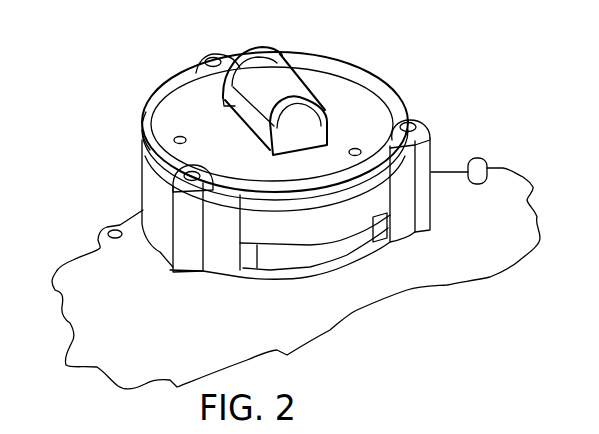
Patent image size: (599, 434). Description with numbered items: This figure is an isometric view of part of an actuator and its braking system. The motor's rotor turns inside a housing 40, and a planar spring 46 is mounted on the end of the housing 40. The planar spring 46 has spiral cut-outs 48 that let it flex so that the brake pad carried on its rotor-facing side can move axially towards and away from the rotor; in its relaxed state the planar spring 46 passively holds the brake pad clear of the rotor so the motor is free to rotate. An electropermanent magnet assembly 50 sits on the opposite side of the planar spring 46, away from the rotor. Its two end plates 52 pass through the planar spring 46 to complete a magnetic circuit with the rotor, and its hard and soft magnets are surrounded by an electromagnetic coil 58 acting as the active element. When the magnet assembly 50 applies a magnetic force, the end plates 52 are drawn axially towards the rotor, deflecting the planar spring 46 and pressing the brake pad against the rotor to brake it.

The housing 40 is at (297, 232).
The planar spring 46 is at (197, 107).
The spiral cut-outs 48 is at (158, 117).
The electropermanent magnet assembly 50 is at (297, 70).
The end plates 52 is at (243, 47).
The electromagnetic coil 58 is at (267, 78).